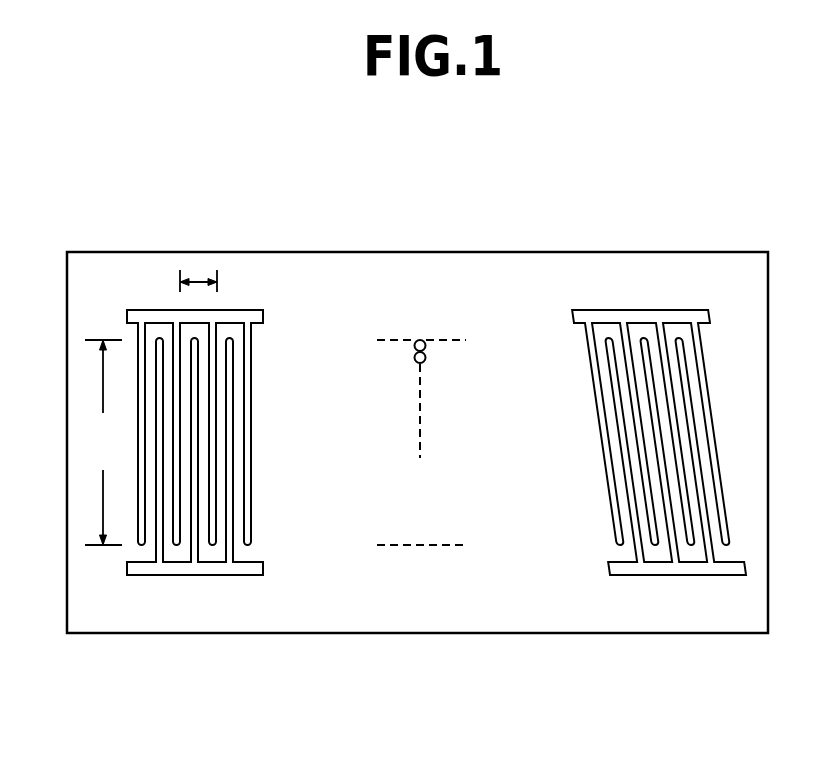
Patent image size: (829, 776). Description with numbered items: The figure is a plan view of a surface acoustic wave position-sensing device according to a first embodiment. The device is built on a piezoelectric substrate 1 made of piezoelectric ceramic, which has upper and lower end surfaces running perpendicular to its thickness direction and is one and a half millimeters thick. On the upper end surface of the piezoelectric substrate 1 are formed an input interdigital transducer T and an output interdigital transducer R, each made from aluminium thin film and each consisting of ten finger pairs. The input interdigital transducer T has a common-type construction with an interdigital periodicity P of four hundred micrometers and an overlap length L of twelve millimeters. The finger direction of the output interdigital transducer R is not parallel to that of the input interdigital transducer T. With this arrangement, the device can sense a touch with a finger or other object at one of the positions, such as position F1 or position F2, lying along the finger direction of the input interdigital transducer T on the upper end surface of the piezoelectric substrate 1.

The piezoelectric substrate 1 is at (512, 604).
The input interdigital transducer T is at (235, 312).
The output interdigital transducer R is at (624, 313).
The interdigital periodicity P is at (198, 282).
The overlap length L is at (103, 442).
The position F1 is at (424, 338).
The position F2 is at (425, 360).